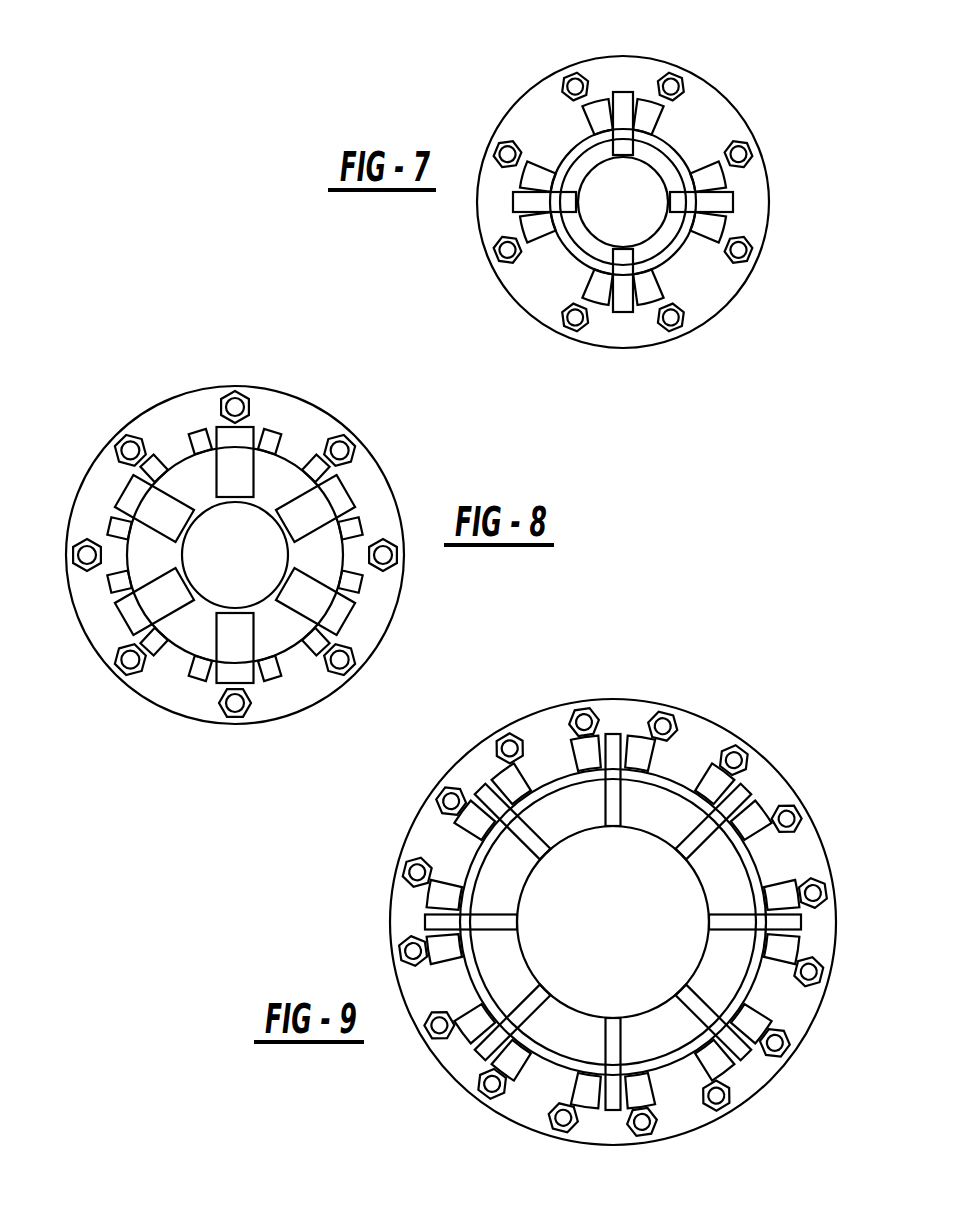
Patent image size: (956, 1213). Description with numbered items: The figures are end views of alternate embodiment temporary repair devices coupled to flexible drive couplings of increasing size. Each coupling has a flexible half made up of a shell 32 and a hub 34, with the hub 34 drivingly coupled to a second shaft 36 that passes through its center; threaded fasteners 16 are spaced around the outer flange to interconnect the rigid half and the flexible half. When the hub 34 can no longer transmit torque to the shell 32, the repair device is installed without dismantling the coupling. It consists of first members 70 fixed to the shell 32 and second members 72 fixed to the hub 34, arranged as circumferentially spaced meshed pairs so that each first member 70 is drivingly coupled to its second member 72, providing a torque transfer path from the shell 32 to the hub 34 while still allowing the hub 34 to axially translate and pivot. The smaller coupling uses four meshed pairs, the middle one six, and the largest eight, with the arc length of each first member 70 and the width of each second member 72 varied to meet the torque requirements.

In FIG. 7, the threaded fasteners 16 is at (676, 83).
In FIG. 8, the threaded fasteners 16 is at (230, 405).
In FIG. 9, the threaded fasteners 16 is at (773, 1043).
In FIG. 7, the shell 32 is at (570, 142).
In FIG. 9, the shell 32 is at (672, 1058).
In FIG. 7, the hub 34 is at (668, 242).
In FIG. 9, the hub 34 is at (723, 882).
In FIG. 7, the second shaft 36 is at (602, 217).
In FIG. 7, the first member 70 is at (651, 118).
In FIG. 8, the first member 70 is at (203, 433).
In FIG. 9, the first member 70 is at (643, 757).
In FIG. 7, the second member 72 is at (627, 100).
In FIG. 8, the second member 72 is at (237, 453).
In FIG. 9, the second member 72 is at (614, 757).